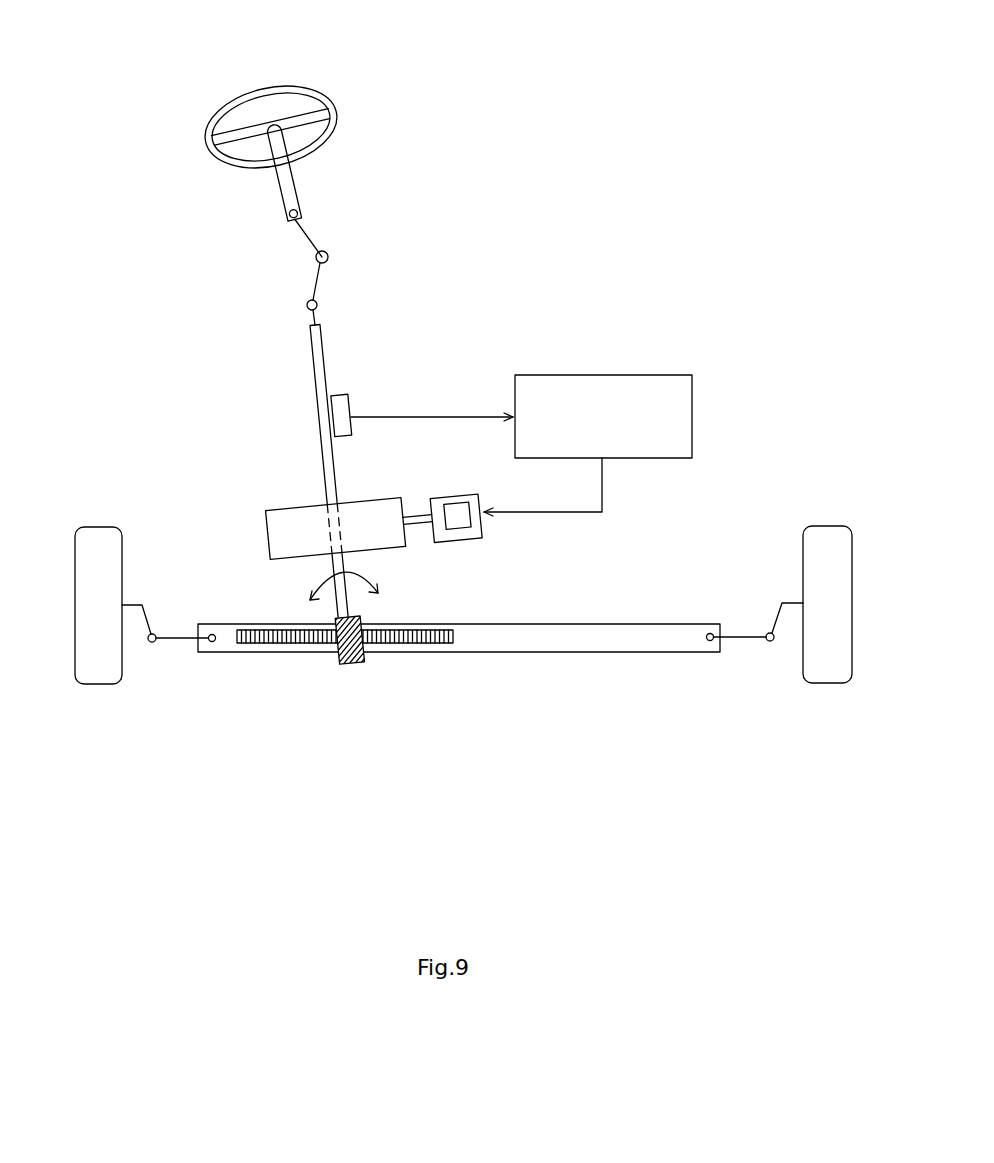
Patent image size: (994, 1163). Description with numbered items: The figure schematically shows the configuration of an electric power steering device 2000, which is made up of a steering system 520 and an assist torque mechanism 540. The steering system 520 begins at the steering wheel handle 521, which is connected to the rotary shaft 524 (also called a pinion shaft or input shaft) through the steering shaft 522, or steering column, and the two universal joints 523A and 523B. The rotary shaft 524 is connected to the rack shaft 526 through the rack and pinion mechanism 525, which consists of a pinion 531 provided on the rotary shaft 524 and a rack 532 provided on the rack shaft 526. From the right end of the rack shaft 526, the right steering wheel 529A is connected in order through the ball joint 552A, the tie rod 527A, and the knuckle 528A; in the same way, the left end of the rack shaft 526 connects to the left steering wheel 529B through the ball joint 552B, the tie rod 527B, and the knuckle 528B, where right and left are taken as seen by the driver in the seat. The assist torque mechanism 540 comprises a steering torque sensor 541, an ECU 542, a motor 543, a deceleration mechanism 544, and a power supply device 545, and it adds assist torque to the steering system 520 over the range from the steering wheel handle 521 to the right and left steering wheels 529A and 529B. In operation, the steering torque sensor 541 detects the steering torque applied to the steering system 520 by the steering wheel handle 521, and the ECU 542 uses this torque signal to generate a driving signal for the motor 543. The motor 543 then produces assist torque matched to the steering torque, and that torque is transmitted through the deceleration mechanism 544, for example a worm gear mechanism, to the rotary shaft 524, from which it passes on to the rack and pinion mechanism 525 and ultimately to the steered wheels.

The power steering device 2000 is at (505, 112).
The steering system 520 is at (275, 337).
The steering wheel handle 521 is at (221, 109).
The steering shaft 522 is at (300, 182).
The universal joint 523A is at (328, 254).
The universal joint 523B is at (318, 304).
The rotary shaft 524 is at (328, 357).
The rack and pinion mechanism 525 is at (362, 666).
The rack shaft 526 is at (505, 634).
The tie rod 527A is at (180, 638).
The tie rod 527B is at (740, 637).
The knuckle 528A is at (137, 605).
The knuckle 528B is at (783, 603).
The right steering wheel 529A is at (97, 680).
The left steering wheel 529B is at (827, 604).
The pinion 531 is at (320, 668).
The rack 532 is at (288, 646).
The assist torque mechanism 540 is at (548, 342).
The steering torque sensor 541 is at (352, 400).
The ECU 542 is at (655, 375).
The motor 543 is at (457, 497).
The deceleration mechanism 544 is at (270, 513).
The power supply device 545 is at (463, 518).
The ball joint 552A is at (212, 642).
The ball joint 552B is at (708, 641).